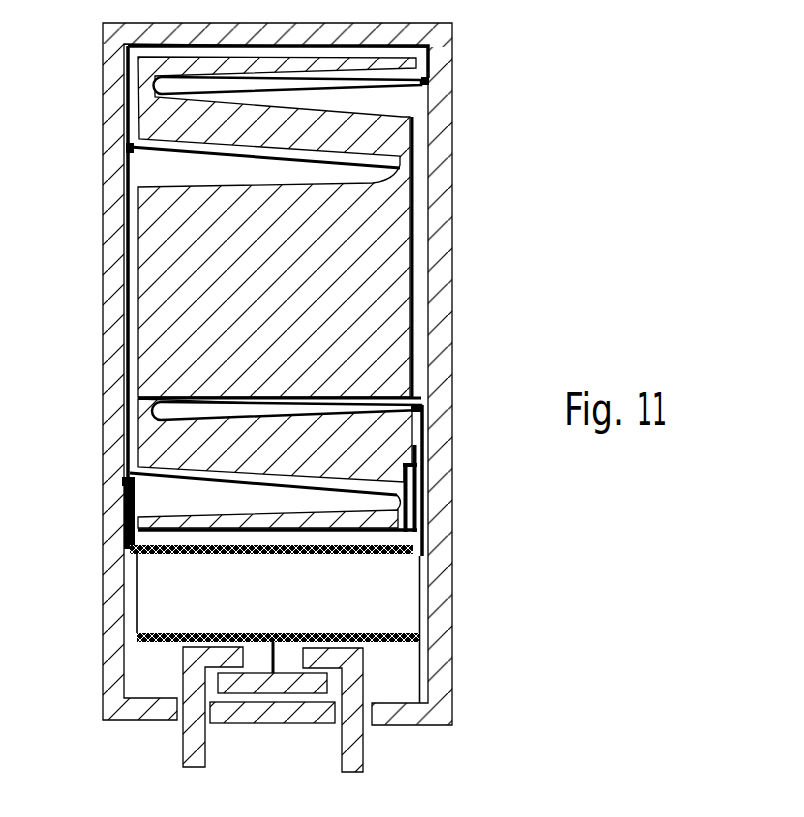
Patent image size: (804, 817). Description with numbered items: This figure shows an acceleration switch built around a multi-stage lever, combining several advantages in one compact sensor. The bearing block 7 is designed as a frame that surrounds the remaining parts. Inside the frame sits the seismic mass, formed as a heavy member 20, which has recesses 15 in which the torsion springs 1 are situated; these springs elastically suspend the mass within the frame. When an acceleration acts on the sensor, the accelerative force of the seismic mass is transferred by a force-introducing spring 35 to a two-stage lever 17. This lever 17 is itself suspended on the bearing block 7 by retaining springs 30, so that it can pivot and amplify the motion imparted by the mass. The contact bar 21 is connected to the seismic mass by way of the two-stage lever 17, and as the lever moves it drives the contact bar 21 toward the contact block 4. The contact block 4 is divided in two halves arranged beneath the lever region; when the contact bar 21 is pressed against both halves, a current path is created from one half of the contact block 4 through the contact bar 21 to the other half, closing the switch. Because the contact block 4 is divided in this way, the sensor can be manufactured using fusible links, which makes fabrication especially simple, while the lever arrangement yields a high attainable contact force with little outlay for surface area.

The bearing block 7 is at (452, 50).
The recesses 15 is at (413, 100).
The torsion springs 1 is at (390, 84).
The heavy member 20 is at (415, 286).
The force-introducing spring 35 is at (412, 495).
The retaining springs 30 is at (421, 533).
The two-stage lever 17 is at (378, 556).
The contact block 4 is at (190, 742).
The contact bar 21 is at (283, 699).